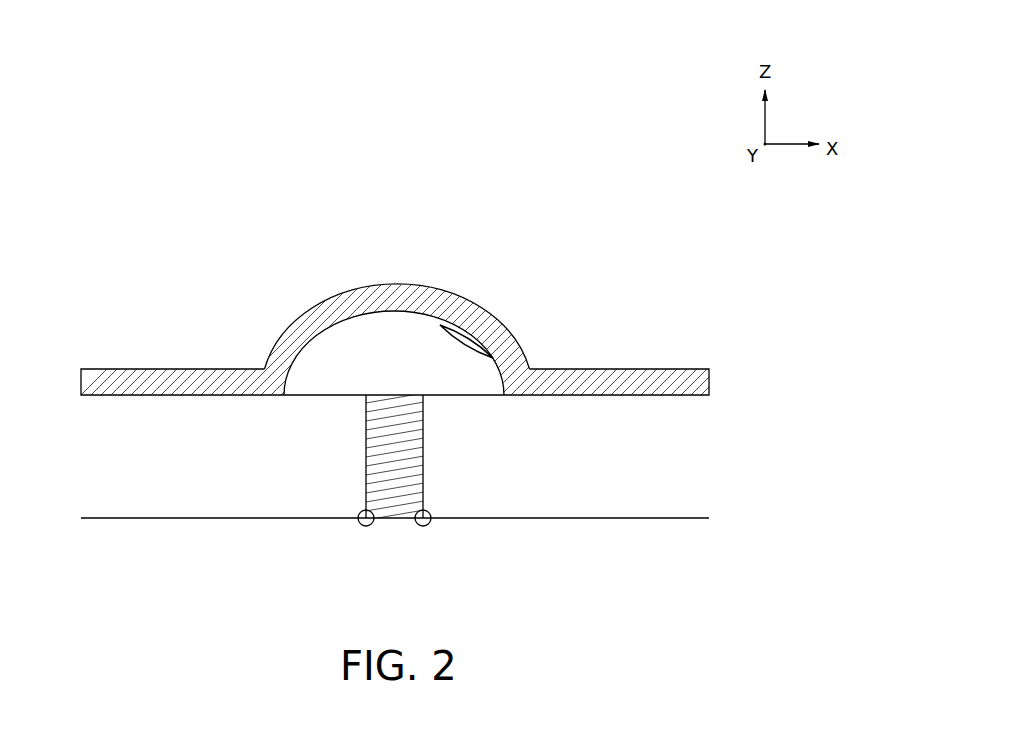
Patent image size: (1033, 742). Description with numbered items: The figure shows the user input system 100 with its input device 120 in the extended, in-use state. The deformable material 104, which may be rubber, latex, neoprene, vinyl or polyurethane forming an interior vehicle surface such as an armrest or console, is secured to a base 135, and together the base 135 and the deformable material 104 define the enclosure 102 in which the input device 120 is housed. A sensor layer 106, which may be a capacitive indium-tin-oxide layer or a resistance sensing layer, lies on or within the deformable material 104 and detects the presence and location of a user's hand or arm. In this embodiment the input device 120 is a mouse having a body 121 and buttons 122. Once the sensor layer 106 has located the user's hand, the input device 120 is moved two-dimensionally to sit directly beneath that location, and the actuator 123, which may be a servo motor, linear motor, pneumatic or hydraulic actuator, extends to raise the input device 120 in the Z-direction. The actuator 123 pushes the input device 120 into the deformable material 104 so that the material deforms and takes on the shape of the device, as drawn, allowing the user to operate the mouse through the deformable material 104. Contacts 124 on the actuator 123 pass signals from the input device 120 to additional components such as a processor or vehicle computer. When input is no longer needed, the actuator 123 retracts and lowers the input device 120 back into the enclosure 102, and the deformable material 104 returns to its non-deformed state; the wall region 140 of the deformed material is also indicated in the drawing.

The user input system 100 is at (93, 158).
The enclosure 102 is at (610, 417).
The deformable material 104 is at (390, 292).
The sensor layer 106 is at (288, 330).
The input device 120 is at (322, 402).
The body 121 is at (340, 347).
The buttons 122 is at (442, 330).
The actuator 123 is at (435, 460).
The contacts 124 is at (362, 528).
The base 135 is at (110, 518).
The dome wall 140 is at (503, 342).